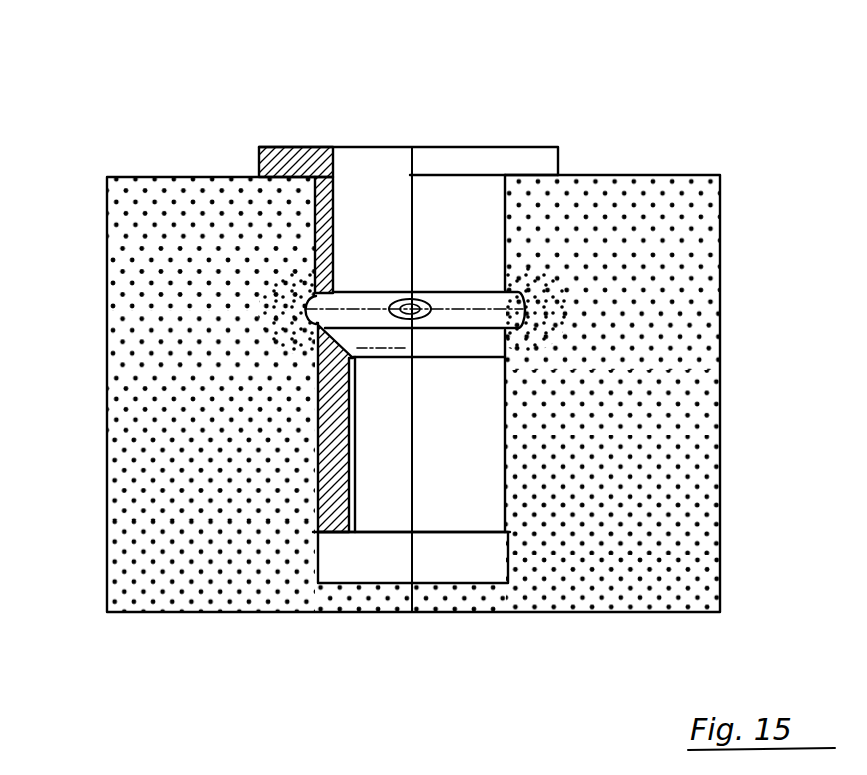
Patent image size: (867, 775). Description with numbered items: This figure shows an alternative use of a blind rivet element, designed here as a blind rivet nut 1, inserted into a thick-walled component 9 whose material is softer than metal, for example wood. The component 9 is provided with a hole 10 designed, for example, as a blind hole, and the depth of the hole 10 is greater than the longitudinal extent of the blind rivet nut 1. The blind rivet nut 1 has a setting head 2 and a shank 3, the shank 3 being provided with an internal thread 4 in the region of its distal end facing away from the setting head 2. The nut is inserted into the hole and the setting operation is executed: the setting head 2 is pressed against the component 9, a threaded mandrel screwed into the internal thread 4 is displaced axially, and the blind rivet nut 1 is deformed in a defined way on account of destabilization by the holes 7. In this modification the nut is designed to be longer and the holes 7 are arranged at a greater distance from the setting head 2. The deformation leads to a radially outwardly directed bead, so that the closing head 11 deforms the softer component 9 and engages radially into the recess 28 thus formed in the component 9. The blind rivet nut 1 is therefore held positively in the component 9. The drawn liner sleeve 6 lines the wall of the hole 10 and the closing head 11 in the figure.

The blind rivet nut 1 is at (526, 118).
The setting head 2 is at (294, 157).
The shank 3 is at (447, 478).
The internal thread 4 is at (355, 498).
The liner sleeve 6 is at (315, 241).
The holes 7 is at (421, 300).
The component 9 is at (202, 527).
The hole 10 is at (316, 560).
The closing head 11 is at (473, 297).
The recess 28 is at (305, 327).